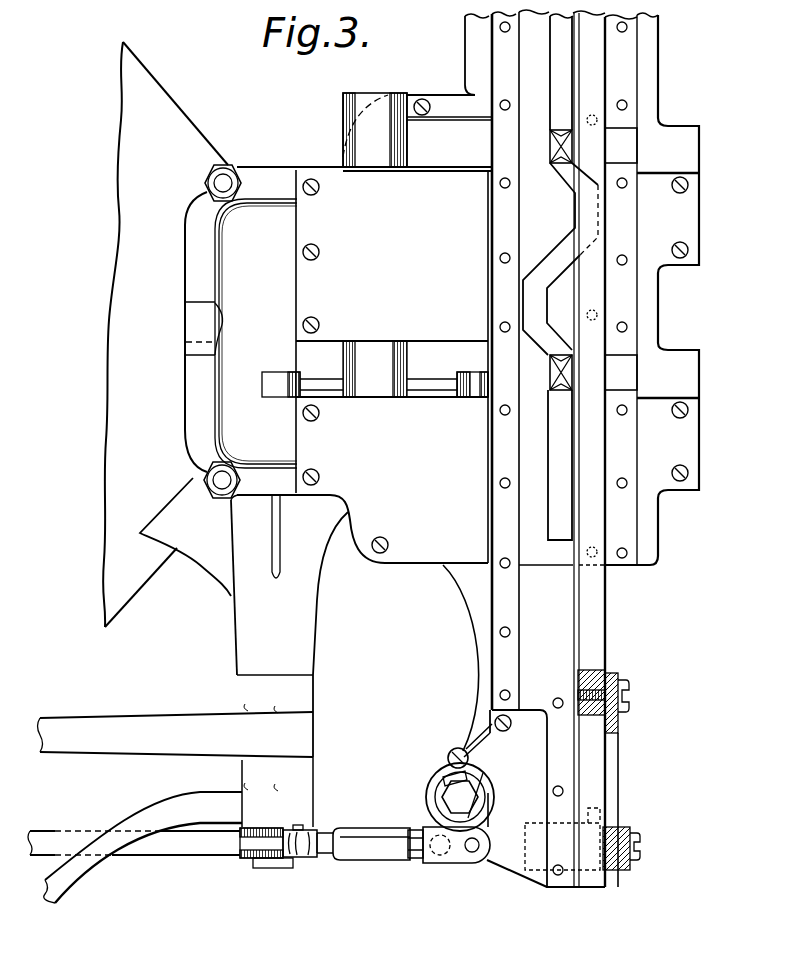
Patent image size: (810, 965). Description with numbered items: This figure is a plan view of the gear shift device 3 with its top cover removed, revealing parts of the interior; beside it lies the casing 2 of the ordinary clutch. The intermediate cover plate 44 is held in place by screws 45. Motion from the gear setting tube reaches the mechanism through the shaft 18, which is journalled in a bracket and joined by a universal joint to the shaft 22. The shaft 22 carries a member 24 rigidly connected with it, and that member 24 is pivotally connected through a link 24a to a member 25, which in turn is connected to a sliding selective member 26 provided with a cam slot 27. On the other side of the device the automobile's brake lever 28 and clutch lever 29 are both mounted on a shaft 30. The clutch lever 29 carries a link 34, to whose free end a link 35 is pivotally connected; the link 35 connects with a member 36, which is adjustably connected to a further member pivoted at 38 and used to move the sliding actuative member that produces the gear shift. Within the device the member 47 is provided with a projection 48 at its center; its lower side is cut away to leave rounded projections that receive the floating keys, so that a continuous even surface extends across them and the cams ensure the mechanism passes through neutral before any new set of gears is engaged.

The clutch casing 2 is at (127, 242).
The gear shift device 3 is at (296, 496).
The shaft 18 is at (183, 847).
The shaft 22 is at (397, 860).
The member 24 is at (618, 843).
The link 24a is at (640, 752).
The member 25 is at (592, 598).
The sliding selective member 26 is at (596, 63).
The cam slot 27 is at (558, 62).
The brake lever 28 is at (104, 727).
The clutch lever 29 is at (79, 877).
The shaft 30 is at (268, 868).
The link 34 is at (303, 857).
The link 35 is at (357, 845).
The member 36 is at (465, 820).
The pivot 38 is at (455, 800).
The intermediate cover plate 44 is at (377, 289).
The screws 45 is at (313, 197).
The member 47 is at (621, 259).
The projection 48 is at (557, 146).